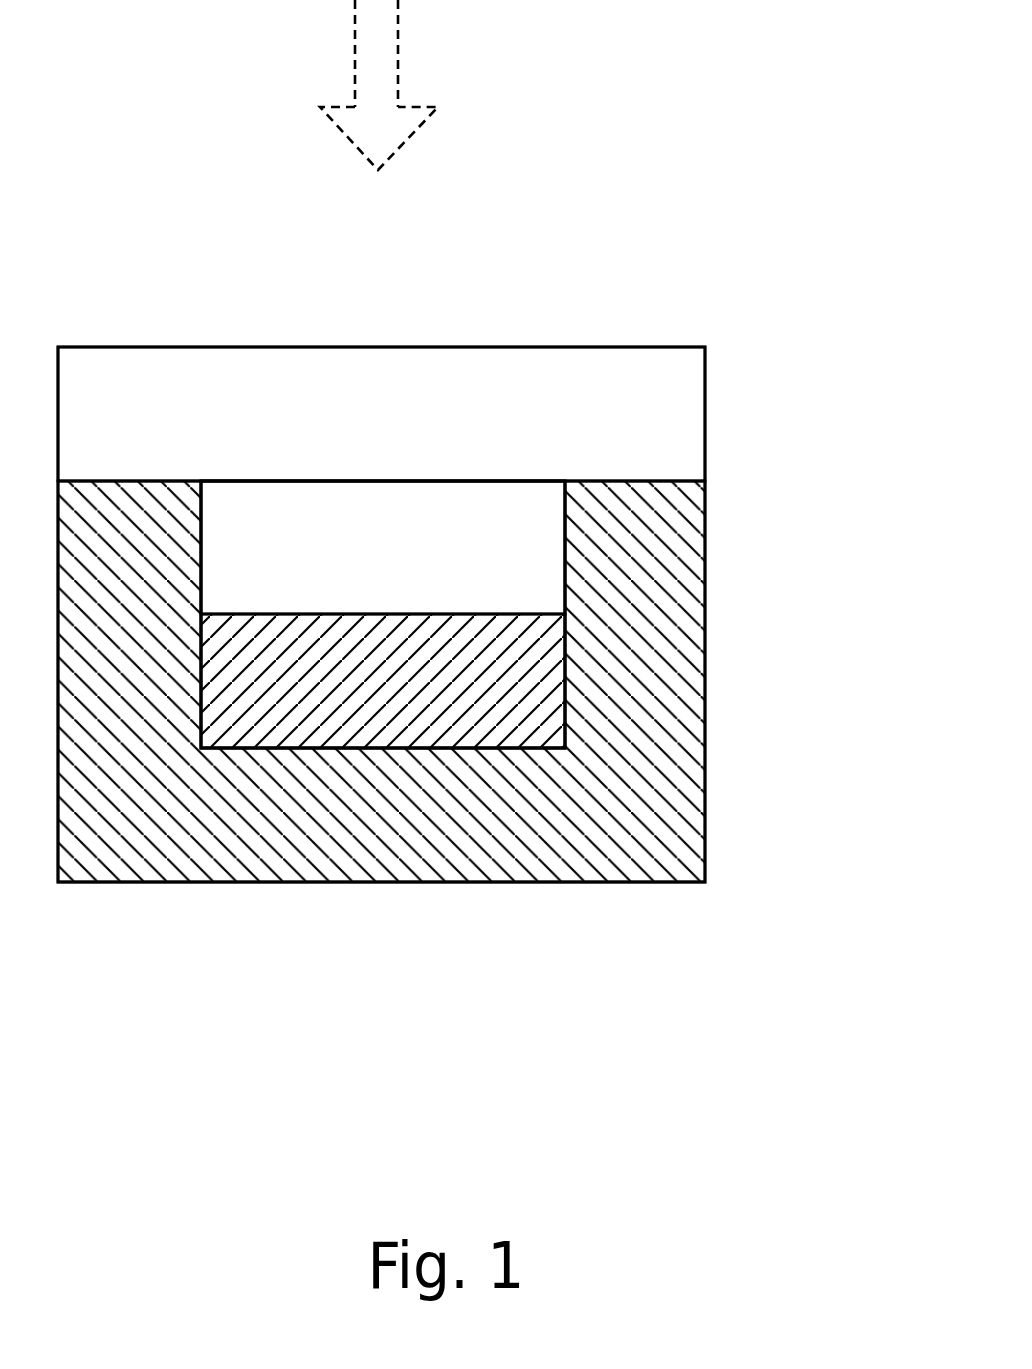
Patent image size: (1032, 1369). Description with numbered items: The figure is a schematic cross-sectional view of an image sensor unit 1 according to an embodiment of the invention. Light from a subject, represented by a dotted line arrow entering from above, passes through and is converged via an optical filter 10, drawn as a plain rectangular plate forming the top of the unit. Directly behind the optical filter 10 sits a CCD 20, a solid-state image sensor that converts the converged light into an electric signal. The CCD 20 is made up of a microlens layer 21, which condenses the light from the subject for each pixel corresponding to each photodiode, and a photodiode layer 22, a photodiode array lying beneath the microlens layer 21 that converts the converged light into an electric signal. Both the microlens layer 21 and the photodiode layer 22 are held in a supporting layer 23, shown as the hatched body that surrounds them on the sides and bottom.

The image sensor unit 1 is at (505, 198).
The optical filter 10 is at (603, 373).
The CCD 20 is at (852, 550).
The microlens layer 21 is at (532, 582).
The photodiode layer 22 is at (532, 657).
The supporting layer 23 is at (532, 853).